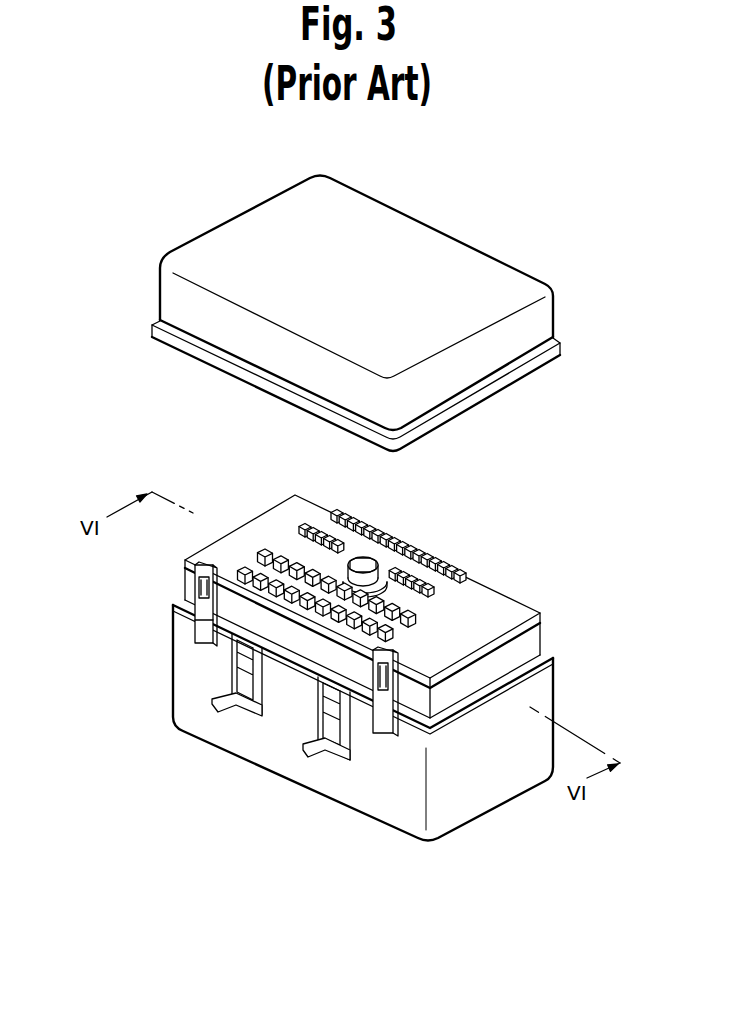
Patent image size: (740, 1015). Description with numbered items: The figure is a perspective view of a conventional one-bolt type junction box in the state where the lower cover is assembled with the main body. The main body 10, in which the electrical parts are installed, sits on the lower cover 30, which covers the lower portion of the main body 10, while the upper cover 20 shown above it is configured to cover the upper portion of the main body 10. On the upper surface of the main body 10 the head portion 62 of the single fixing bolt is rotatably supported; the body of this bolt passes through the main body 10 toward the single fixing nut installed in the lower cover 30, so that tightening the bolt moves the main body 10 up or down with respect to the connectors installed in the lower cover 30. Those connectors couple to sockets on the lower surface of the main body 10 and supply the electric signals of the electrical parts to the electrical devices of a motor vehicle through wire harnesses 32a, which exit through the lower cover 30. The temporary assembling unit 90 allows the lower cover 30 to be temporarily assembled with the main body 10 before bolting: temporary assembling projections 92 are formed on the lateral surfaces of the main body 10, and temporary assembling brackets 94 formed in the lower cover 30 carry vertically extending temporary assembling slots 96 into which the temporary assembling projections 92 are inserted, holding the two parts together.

The upper cover 20 is at (173, 293).
The main body 10 is at (314, 604).
The head portion 62 is at (368, 562).
The temporary assembling unit 90 is at (224, 726).
The temporary assembling slot 96 is at (200, 592).
The temporary assembling projection 92 is at (197, 610).
The temporary assembling bracket 94 is at (203, 627).
The lower cover 30 is at (320, 726).
The wire harness 32a is at (238, 720).